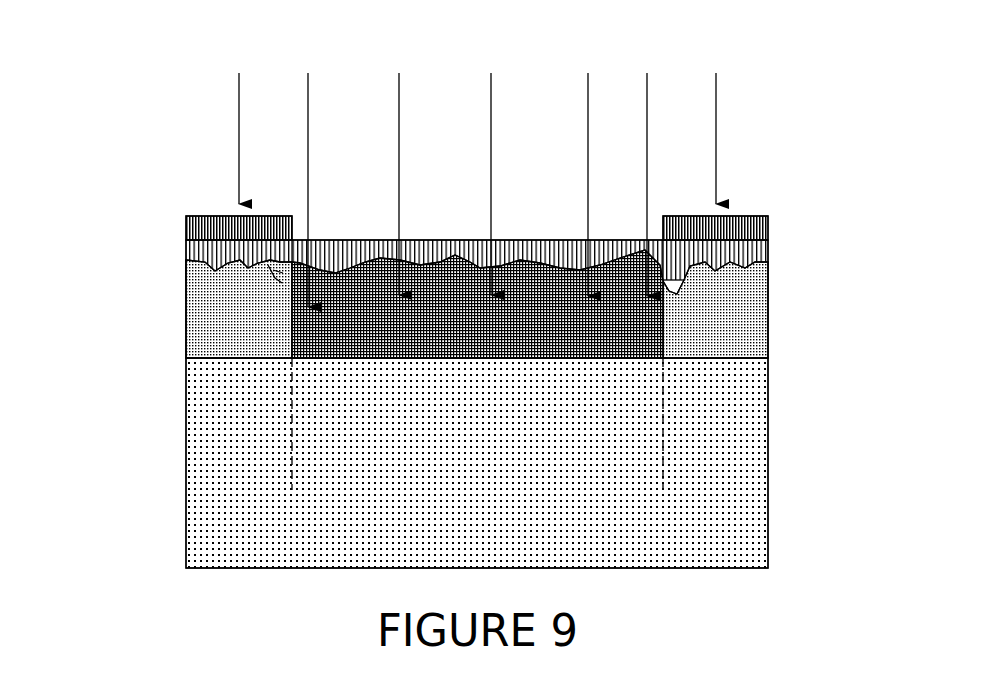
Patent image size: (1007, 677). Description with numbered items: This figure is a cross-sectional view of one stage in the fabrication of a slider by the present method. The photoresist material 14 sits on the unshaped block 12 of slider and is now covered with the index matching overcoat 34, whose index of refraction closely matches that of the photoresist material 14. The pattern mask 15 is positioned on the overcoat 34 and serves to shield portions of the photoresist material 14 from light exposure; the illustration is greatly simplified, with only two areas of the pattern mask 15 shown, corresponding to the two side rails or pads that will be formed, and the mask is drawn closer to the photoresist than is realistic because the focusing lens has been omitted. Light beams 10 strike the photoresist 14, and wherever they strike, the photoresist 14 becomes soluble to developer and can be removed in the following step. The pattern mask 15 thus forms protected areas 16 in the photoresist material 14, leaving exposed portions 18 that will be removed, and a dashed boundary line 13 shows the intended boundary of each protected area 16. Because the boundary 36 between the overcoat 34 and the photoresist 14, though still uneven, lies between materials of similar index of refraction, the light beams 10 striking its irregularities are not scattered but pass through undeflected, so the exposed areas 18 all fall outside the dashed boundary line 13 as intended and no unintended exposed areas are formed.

The light beams 10 is at (399, 183).
The unshaped block 12 is at (206, 425).
The dashed boundary line 13 is at (292, 400).
The photoresist material 14 is at (186, 328).
The pattern mask 15 is at (186, 237).
The protected areas 16 is at (186, 337).
The exposed portions 18 is at (414, 248).
The index matching overcoat 34 is at (186, 250).
The boundary 36 is at (565, 244).